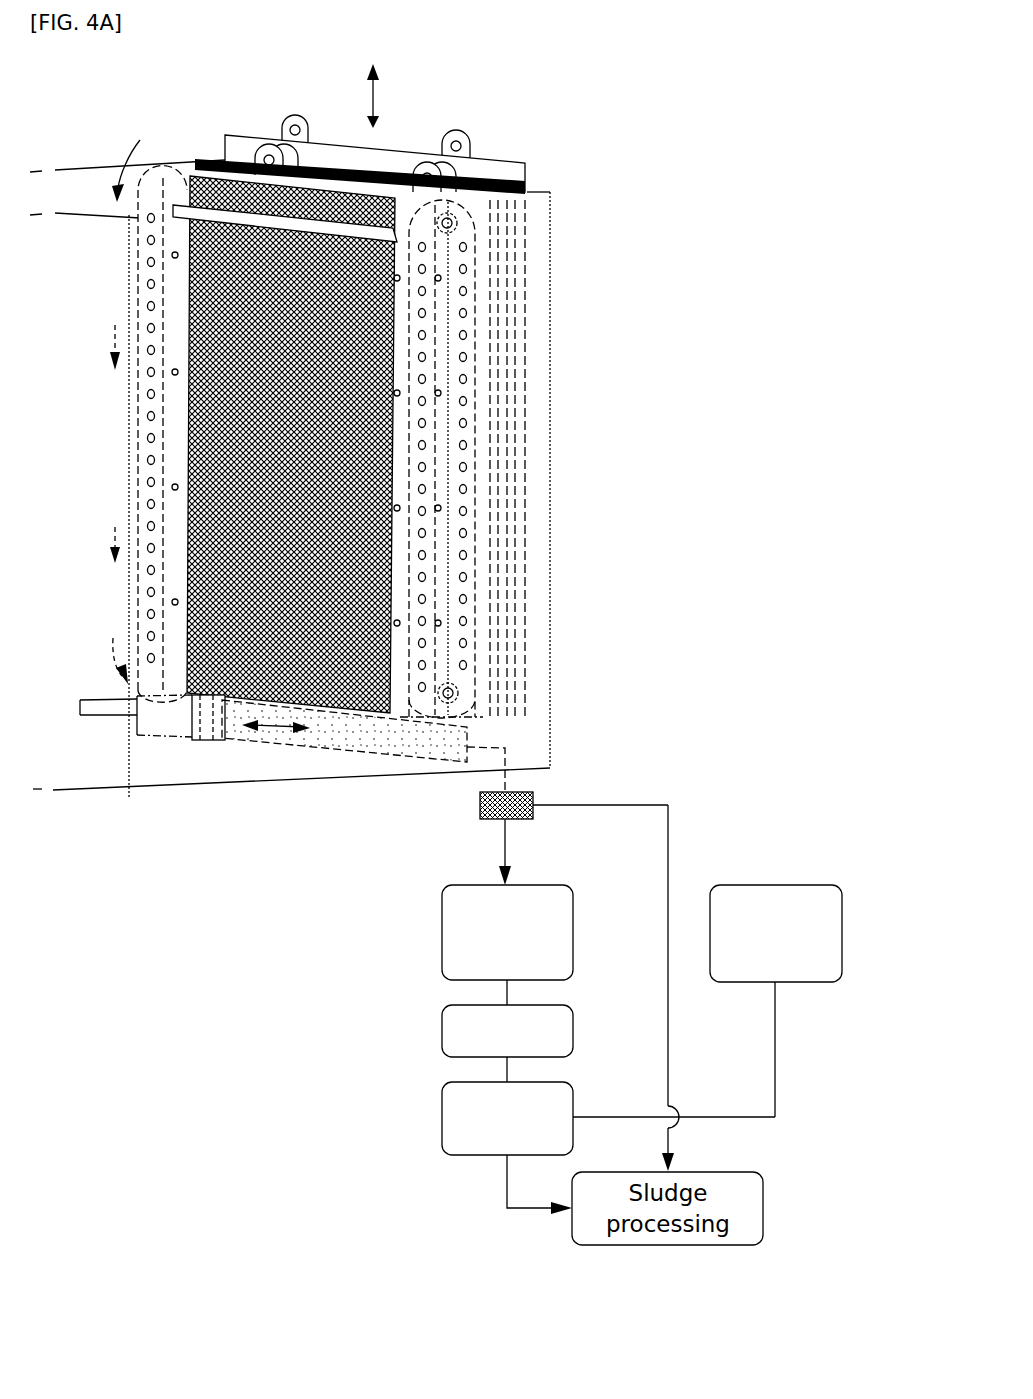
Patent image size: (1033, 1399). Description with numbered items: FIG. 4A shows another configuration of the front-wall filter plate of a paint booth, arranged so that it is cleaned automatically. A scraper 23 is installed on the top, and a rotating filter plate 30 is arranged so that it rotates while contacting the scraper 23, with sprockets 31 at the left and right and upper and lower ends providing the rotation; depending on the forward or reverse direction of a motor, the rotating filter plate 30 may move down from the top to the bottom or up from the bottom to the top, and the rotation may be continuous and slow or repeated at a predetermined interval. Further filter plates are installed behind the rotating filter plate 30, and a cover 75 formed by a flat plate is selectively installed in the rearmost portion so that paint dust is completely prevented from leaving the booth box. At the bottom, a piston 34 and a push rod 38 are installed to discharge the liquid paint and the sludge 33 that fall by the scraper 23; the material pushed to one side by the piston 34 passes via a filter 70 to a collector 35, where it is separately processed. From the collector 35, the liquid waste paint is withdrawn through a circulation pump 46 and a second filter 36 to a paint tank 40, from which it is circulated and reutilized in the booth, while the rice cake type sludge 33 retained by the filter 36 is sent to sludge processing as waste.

The cover 75 is at (225, 146).
The scraper 23 is at (150, 220).
The sprocket 31 is at (536, 458).
The rotating filter plate 30 is at (287, 441).
The push rod 38 is at (82, 702).
The piston 34 is at (197, 745).
The sludge 33 is at (330, 744).
The filter 70 is at (480, 811).
The collector 35 is at (442, 932).
The circulation pump 46 is at (442, 1028).
The second filter 36 is at (442, 1117).
The paint tank 40 is at (842, 930).